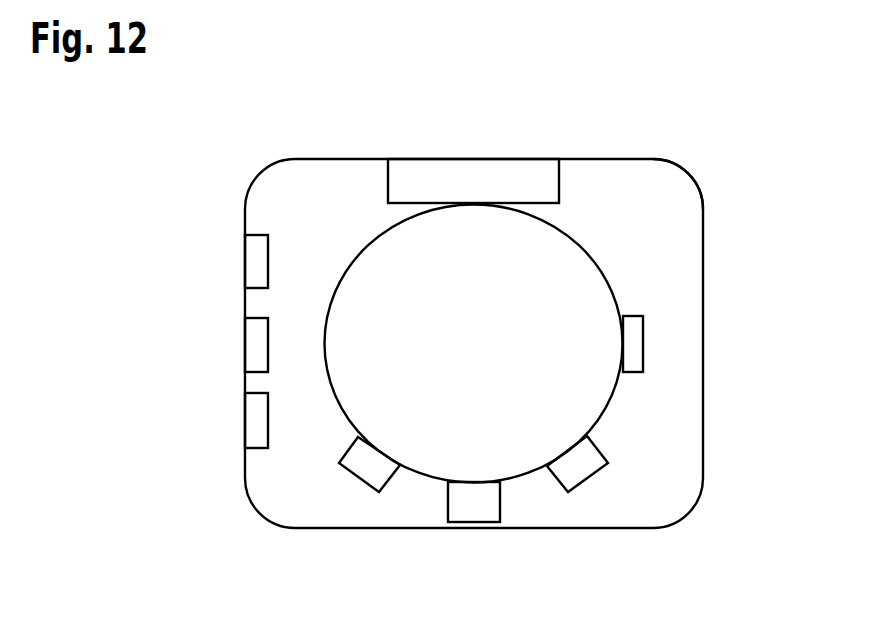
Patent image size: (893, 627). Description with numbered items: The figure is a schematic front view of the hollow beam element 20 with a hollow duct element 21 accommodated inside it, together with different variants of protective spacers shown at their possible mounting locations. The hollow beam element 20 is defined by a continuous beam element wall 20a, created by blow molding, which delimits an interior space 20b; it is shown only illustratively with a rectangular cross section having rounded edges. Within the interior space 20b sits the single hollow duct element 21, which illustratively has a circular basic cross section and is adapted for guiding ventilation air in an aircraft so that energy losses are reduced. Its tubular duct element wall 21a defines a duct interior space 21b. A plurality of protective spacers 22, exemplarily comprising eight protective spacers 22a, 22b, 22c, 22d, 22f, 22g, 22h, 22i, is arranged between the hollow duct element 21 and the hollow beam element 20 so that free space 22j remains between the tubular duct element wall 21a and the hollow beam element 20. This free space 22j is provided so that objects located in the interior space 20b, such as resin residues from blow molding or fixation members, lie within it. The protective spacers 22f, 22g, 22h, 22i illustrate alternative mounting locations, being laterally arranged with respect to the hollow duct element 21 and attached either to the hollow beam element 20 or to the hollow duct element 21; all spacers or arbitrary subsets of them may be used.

The hollow beam element 20 is at (258, 170).
The beam element wall 20a is at (694, 183).
The interior space 20b is at (639, 230).
The hollow duct element 21 is at (343, 423).
The tubular duct element wall 21a is at (621, 389).
The duct interior space 21b is at (512, 286).
The plurality of protective spacers 22 is at (617, 453).
The protective spacer 22a is at (580, 472).
The protective spacer 22b is at (373, 473).
The protective spacer 22c is at (482, 177).
The protective spacer 22d is at (476, 502).
The protective spacer 22f is at (645, 340).
The protective spacer 22g is at (255, 263).
The protective spacer 22h is at (255, 339).
The protective spacer 22i is at (255, 423).
The free space 22j is at (336, 204).